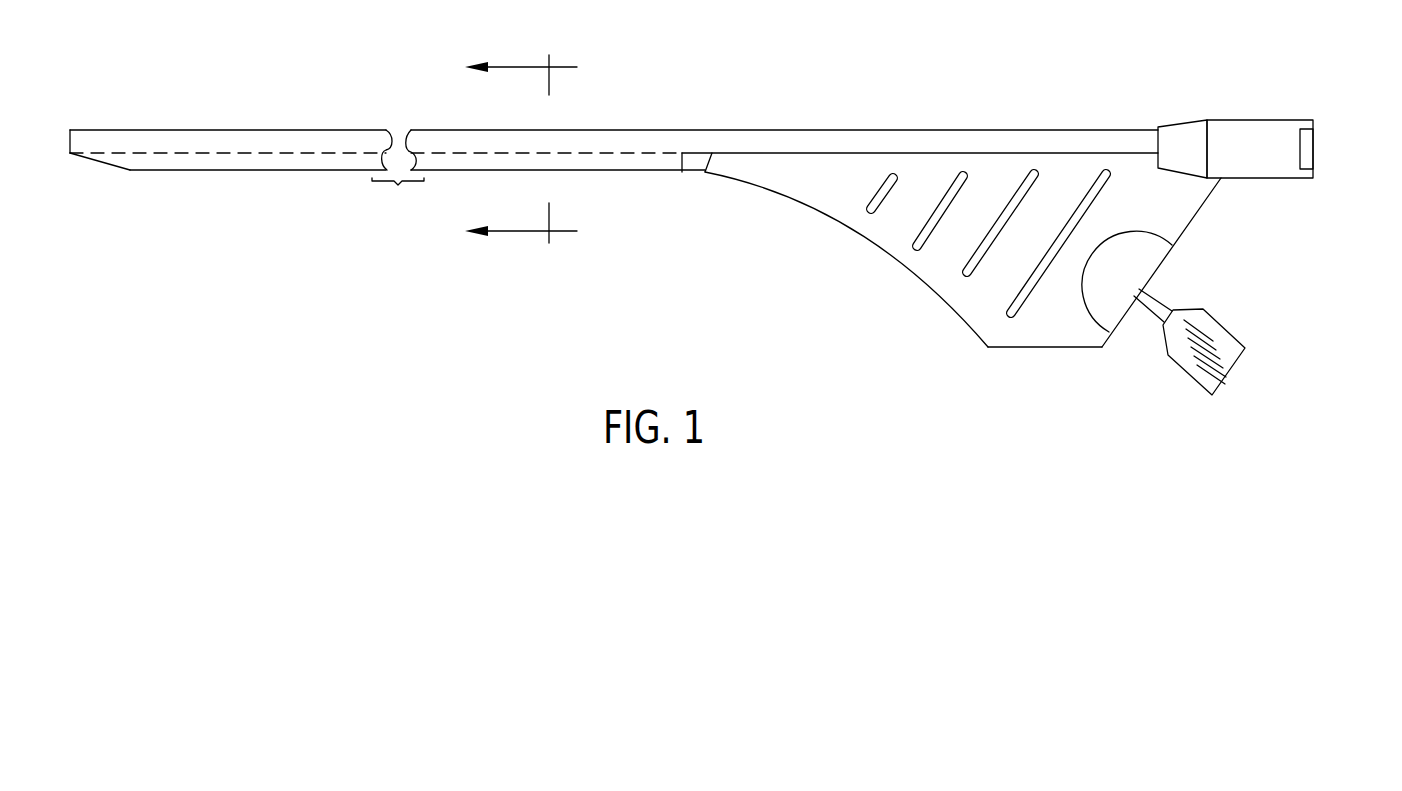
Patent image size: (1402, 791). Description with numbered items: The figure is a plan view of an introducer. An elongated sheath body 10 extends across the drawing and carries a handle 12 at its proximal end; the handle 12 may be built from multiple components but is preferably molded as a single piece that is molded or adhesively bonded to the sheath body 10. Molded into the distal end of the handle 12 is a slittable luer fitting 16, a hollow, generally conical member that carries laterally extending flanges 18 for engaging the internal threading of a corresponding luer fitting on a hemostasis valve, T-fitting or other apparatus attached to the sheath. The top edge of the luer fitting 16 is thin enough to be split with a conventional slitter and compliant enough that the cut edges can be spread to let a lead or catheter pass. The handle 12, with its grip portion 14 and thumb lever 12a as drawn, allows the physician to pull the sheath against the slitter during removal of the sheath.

The sheath body 10 is at (210, 137).
The handle 12 is at (861, 280).
The lever 12a is at (1117, 306).
The grip 14 is at (1040, 328).
The slittable luer fitting 16 is at (1240, 132).
The laterally extending flanges 18 is at (1313, 148).